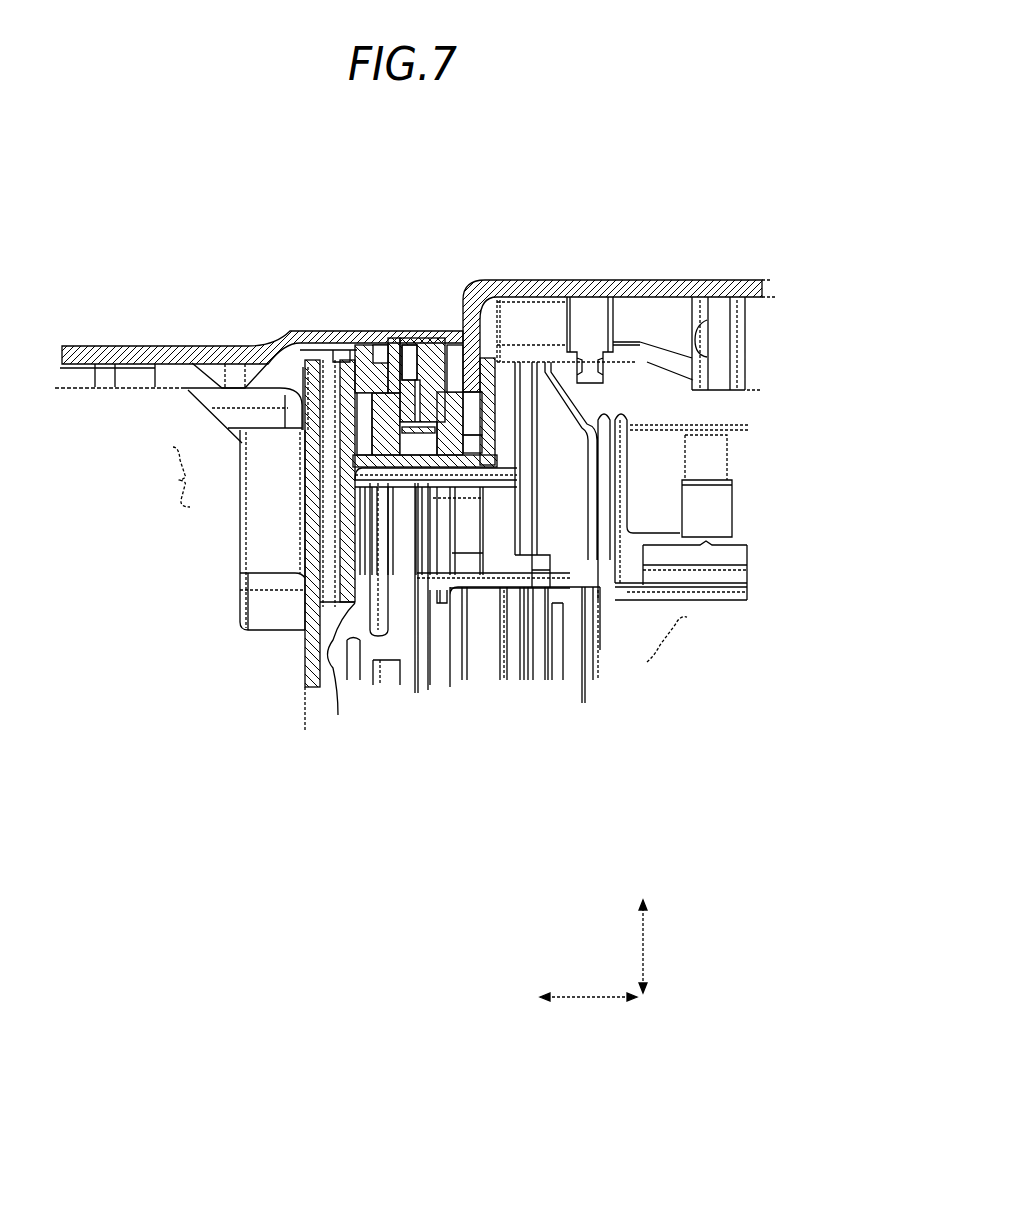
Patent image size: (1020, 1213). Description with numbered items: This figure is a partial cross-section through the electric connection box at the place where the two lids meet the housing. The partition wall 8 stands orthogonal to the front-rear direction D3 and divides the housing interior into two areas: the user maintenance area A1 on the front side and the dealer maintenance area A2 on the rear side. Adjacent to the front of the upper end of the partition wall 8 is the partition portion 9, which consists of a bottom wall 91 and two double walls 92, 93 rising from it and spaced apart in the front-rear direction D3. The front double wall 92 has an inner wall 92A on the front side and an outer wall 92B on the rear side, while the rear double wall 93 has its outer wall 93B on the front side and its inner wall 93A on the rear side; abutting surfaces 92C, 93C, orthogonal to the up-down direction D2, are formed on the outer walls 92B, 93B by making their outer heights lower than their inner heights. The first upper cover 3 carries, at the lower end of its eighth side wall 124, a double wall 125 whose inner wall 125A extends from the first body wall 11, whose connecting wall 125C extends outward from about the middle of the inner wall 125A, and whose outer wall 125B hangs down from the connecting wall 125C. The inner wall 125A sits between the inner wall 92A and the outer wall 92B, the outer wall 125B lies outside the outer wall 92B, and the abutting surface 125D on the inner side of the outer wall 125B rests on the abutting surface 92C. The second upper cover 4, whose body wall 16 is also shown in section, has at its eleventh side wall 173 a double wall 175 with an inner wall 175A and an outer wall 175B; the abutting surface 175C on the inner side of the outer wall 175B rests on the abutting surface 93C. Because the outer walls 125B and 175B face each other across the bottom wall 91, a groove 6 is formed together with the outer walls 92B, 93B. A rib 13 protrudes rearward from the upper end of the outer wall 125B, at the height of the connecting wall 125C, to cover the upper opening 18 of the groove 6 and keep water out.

The first upper cover 3 is at (680, 281).
The second upper cover 4 is at (109, 345).
The groove 6 is at (432, 340).
The partition wall 8 is at (328, 640).
The partition portion 9 is at (151, 982).
The first body wall 11 is at (648, 290).
The rib 13 is at (418, 356).
The top plate 16 is at (160, 345).
The upper opening 18 is at (380, 342).
The bottom wall 91 is at (417, 480).
The front double wall 92 is at (597, 540).
The inner wall 92A is at (462, 410).
The outer wall 92B is at (447, 445).
The abutting surface 92C is at (478, 415).
The rear double wall 93 is at (246, 530).
The inner wall 93A is at (340, 437).
The outer wall 93B is at (343, 467).
The abutting surface 93C is at (332, 402).
The eighth side wall 124 is at (497, 380).
The double wall 125 is at (256, 982).
The inner wall 125A is at (486, 368).
The outer wall 125B is at (447, 338).
The connecting wall 125C is at (469, 382).
The abutting surface 125D is at (483, 378).
The eleventh side wall 173 is at (302, 338).
The double wall 175 is at (371, 973).
The inner wall 175A is at (352, 377).
The outer wall 175B is at (378, 342).
The abutting surface 175C is at (365, 360).
The user maintenance area A1 is at (505, 700).
The dealer maintenance area A2 is at (215, 612).
The up-down direction D2 is at (645, 940).
The front-rear direction D3 is at (588, 999).